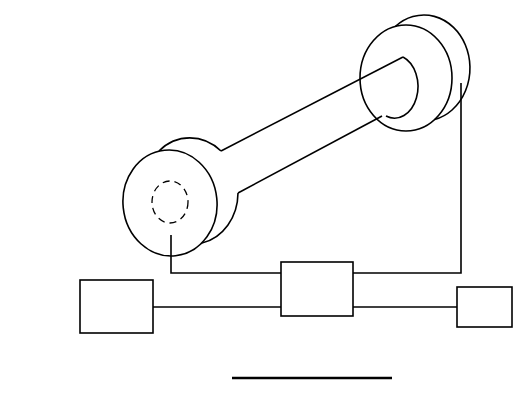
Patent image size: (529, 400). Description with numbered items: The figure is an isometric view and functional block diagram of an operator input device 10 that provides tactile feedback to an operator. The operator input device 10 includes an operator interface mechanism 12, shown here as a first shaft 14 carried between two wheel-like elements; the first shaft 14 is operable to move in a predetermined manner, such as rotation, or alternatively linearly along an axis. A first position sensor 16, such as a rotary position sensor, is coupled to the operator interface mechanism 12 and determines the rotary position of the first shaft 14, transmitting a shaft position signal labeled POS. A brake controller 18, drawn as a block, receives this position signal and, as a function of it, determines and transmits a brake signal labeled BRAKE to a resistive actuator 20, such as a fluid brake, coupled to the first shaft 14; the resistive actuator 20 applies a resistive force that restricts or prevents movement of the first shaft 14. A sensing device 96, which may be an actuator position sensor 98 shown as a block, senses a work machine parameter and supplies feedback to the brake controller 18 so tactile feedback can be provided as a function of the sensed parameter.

The operator input device 10 is at (229, 48).
The operator interface mechanism 12 is at (205, 99).
The first shaft 14 is at (290, 116).
The first position sensor 16 is at (140, 162).
The brake controller 18 is at (328, 302).
The resistive actuator 20 is at (376, 34).
The sensing device 96 is at (91, 237).
The actuator position sensor 98 is at (128, 318).